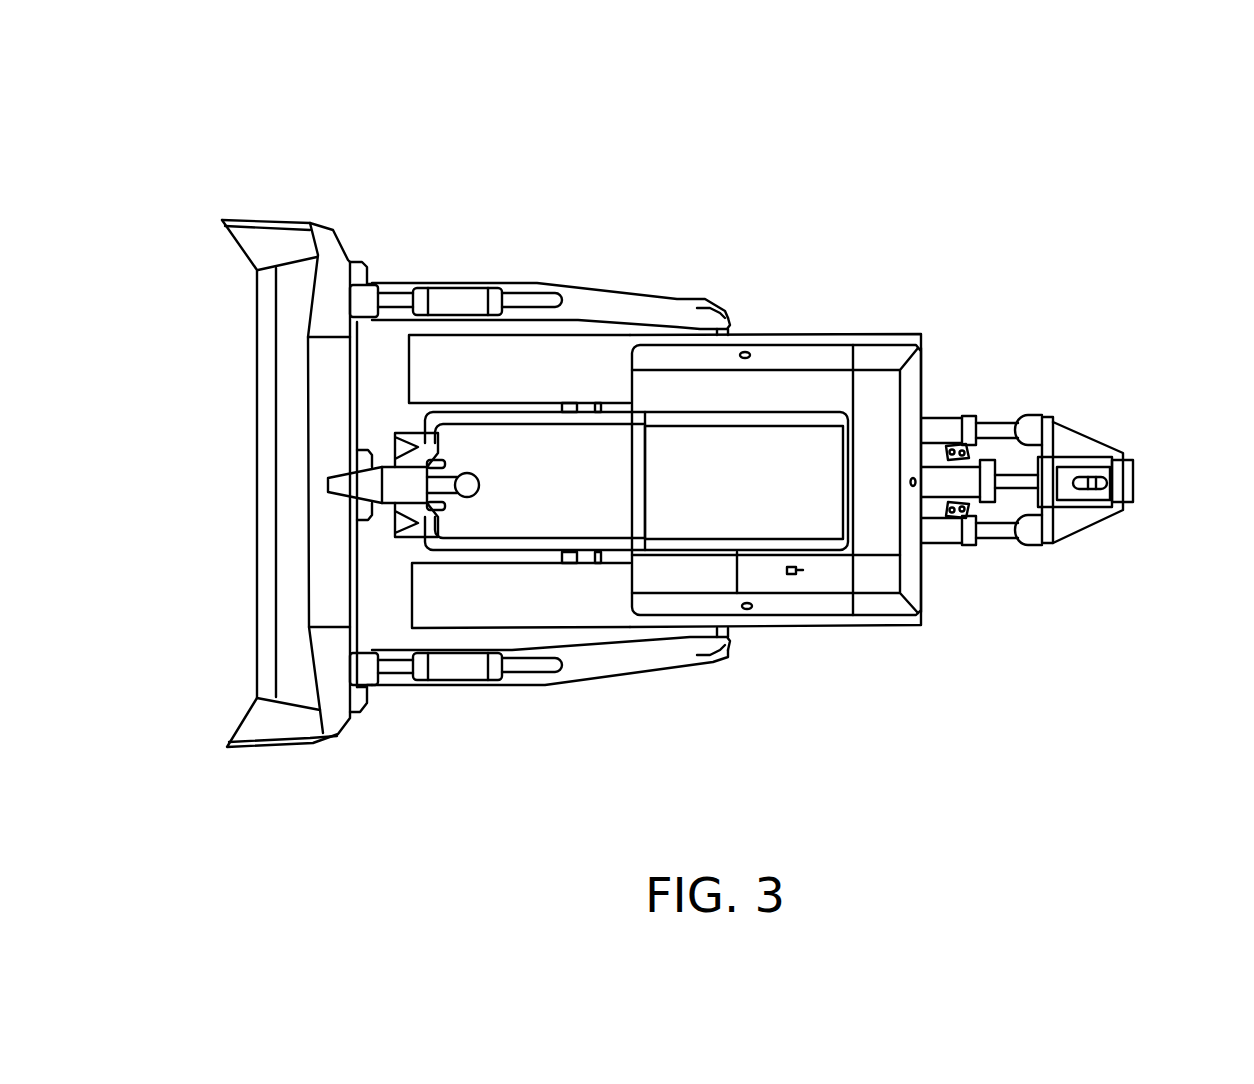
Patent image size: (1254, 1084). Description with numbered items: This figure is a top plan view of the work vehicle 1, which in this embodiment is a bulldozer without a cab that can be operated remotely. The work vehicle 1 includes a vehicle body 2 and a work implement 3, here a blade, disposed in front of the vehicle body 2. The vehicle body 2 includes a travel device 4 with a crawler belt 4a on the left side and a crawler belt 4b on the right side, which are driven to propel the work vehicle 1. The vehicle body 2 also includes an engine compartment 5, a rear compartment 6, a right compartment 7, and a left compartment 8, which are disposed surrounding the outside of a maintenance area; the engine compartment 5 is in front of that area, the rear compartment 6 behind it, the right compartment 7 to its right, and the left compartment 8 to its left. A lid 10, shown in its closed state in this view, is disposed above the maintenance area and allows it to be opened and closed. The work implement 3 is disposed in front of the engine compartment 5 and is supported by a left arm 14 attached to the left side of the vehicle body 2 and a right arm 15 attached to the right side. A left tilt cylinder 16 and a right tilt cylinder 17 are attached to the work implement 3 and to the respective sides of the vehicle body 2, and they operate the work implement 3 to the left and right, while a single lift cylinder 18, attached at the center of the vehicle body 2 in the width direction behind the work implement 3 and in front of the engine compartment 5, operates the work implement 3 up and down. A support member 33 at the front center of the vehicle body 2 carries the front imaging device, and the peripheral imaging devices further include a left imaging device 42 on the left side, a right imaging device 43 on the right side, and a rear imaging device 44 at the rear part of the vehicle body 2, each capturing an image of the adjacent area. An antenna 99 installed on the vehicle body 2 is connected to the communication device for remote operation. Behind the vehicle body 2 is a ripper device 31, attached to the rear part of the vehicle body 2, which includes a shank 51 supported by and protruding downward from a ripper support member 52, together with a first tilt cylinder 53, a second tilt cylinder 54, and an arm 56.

The work vehicle 1 is at (428, 162).
The vehicle body 2 is at (889, 312).
The work implement 3 is at (288, 372).
The travel device 4 is at (473, 642).
The crawler belt 4a is at (538, 613).
The crawler belt 4b is at (507, 357).
The engine compartment 5 is at (593, 443).
The rear compartment 6 is at (890, 400).
The right compartment 7 is at (820, 390).
The left compartment 8 is at (827, 580).
The lid 10 is at (732, 457).
The left arm 14 is at (650, 658).
The right arm 15 is at (640, 310).
The left tilt cylinder 16 is at (445, 673).
The right tilt cylinder 17 is at (430, 293).
The lift cylinder 18 is at (462, 487).
The ripper device 31 is at (1011, 402).
The support member 33 is at (360, 485).
The left imaging device 42 is at (748, 612).
The right imaging device 43 is at (745, 351).
The rear imaging device 44 is at (920, 482).
The shank 51 is at (1100, 470).
The ripper support member 52 is at (1087, 500).
The first tilt cylinder 53 is at (998, 532).
The second tilt cylinder 54 is at (998, 431).
The arm 56 is at (1110, 510).
The antenna 99 is at (792, 578).